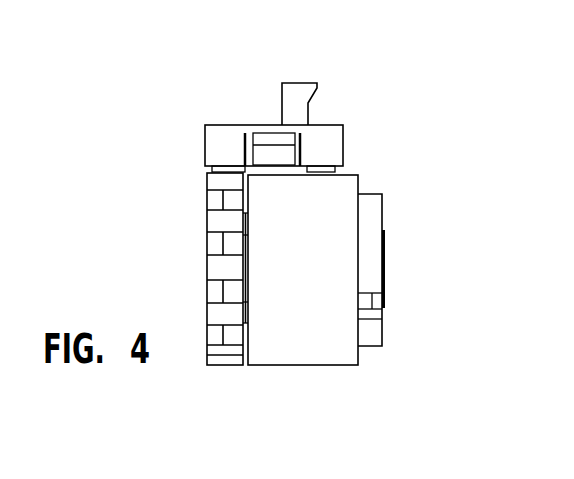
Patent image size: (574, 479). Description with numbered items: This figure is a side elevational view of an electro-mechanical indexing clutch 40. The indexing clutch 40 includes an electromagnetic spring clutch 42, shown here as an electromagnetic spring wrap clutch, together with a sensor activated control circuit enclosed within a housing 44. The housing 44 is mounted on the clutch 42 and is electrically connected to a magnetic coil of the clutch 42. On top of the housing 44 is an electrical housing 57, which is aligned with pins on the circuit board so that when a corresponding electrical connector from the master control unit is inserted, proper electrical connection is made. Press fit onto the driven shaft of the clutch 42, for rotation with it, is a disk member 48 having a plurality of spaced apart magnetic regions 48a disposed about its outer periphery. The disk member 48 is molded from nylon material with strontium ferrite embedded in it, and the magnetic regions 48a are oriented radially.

The electro-mechanical indexing clutch 40 is at (140, 132).
The electromagnetic spring clutch 42 is at (396, 207).
The housing 44 is at (340, 112).
The disk member 48 is at (212, 204).
The magnetic regions 48a is at (212, 219).
The electrical housing 57 is at (282, 97).